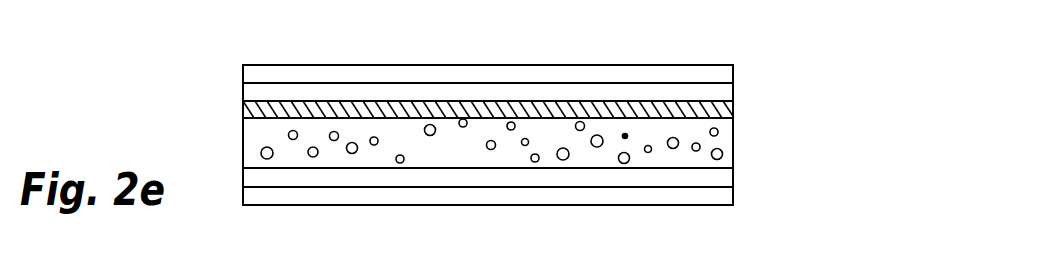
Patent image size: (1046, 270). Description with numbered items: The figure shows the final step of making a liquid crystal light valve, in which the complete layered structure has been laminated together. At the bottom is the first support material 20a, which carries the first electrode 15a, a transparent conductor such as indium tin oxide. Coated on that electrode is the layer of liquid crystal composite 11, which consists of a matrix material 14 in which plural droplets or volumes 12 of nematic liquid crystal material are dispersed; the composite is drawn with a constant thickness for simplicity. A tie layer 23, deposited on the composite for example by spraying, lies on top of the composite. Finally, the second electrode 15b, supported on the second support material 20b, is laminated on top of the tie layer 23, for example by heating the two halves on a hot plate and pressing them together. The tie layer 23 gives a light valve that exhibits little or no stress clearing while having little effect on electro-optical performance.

The second support material 20b is at (737, 70).
The second electrode 15b is at (737, 94).
The tie layer 23 is at (247, 108).
The liquid crystal composite 11 is at (735, 135).
The matrix material 14 is at (250, 138).
The volumes of liquid crystal material 12 is at (352, 156).
The first electrode 15a is at (735, 180).
The first support material 20a is at (735, 198).